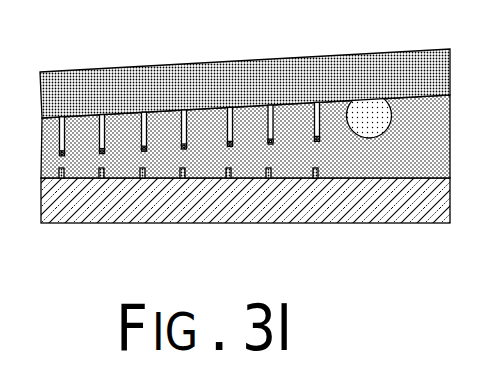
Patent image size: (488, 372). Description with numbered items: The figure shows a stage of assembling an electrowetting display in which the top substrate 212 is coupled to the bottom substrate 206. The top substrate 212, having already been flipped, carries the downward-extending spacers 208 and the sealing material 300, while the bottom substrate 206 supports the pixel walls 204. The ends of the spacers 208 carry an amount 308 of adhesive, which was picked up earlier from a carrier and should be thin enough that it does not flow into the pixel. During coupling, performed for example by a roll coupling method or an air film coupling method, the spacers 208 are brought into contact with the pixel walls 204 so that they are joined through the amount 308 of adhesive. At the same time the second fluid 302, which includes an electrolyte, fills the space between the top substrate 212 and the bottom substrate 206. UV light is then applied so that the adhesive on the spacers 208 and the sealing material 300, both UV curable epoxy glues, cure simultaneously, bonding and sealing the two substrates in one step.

The pixel walls 204 is at (272, 170).
The bottom substrate 206 is at (359, 223).
The spacers 208 is at (181, 128).
The top substrate 212 is at (262, 94).
The sealing material 300 is at (394, 114).
The second fluid 302 is at (422, 167).
The amount of adhesive 308 is at (273, 141).